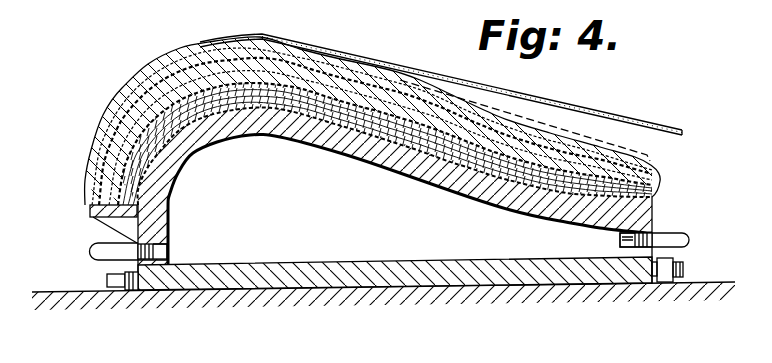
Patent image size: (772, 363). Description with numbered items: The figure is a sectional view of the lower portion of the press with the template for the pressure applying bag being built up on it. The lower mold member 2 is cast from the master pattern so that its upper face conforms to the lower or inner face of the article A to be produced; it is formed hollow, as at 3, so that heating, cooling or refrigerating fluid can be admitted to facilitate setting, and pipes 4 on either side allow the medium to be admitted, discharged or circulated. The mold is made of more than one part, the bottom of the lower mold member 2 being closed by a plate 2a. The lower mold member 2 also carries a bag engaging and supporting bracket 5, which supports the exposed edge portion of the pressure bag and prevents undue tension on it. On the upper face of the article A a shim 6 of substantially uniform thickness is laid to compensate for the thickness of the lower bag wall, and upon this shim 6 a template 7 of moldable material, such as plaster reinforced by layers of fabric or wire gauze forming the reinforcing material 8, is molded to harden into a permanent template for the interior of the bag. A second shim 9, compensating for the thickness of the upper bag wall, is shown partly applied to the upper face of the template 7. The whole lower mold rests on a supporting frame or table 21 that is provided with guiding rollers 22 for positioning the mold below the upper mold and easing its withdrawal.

The lower mold member 2 is at (307, 127).
The plate 2a is at (288, 275).
The hollow interior space 3 is at (288, 202).
The pipes 4 is at (90, 248).
The bag engaging and supporting bracket 5 is at (92, 213).
The shim 6 is at (350, 100).
The template 7 is at (208, 42).
The reinforcing material 8 is at (127, 128).
The second shim 9 is at (143, 78).
The supporting frame or table 21 is at (402, 297).
The guiding rollers 22 is at (107, 278).
The article A is at (293, 88).